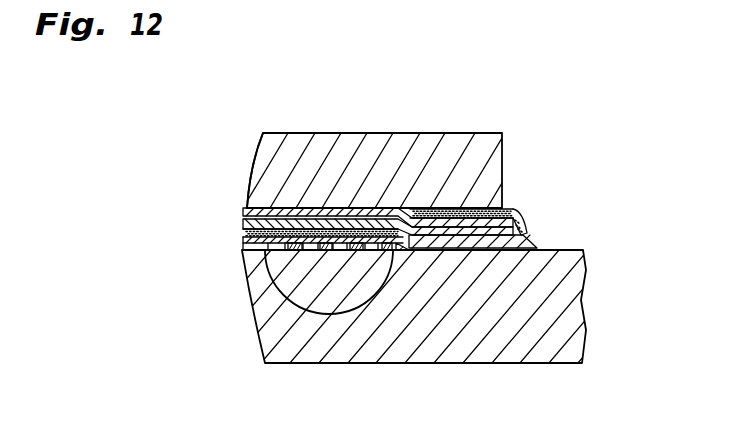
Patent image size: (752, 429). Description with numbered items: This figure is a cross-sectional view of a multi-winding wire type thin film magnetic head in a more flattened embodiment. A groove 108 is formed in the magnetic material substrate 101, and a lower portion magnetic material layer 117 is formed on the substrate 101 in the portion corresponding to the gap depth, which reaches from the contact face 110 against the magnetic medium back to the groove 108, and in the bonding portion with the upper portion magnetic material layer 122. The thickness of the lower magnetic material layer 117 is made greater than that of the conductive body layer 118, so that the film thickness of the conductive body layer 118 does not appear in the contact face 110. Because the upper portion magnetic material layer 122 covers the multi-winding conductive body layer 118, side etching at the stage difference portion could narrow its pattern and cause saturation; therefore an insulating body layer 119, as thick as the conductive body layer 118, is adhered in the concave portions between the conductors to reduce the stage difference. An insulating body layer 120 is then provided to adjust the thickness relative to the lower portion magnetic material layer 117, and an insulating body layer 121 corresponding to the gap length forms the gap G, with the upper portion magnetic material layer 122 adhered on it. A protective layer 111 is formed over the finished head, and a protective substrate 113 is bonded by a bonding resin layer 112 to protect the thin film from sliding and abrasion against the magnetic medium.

The magnetic material substrate 101 is at (510, 330).
The groove 108 is at (334, 317).
The contact face against the magnetic medium 110 is at (247, 182).
The protective layer 111 is at (519, 220).
The bonding resin layer 112 is at (507, 212).
The protective substrate 113 is at (490, 185).
The lower portion magnetic material layer 117 is at (530, 240).
The conductive body layer 118 is at (268, 250).
The insulating body layer 119 is at (388, 251).
The insulating body layer 120 is at (400, 208).
The insulating body layer 121 is at (368, 210).
The upper portion magnetic material layer 122 is at (312, 208).
The gap G is at (218, 223).